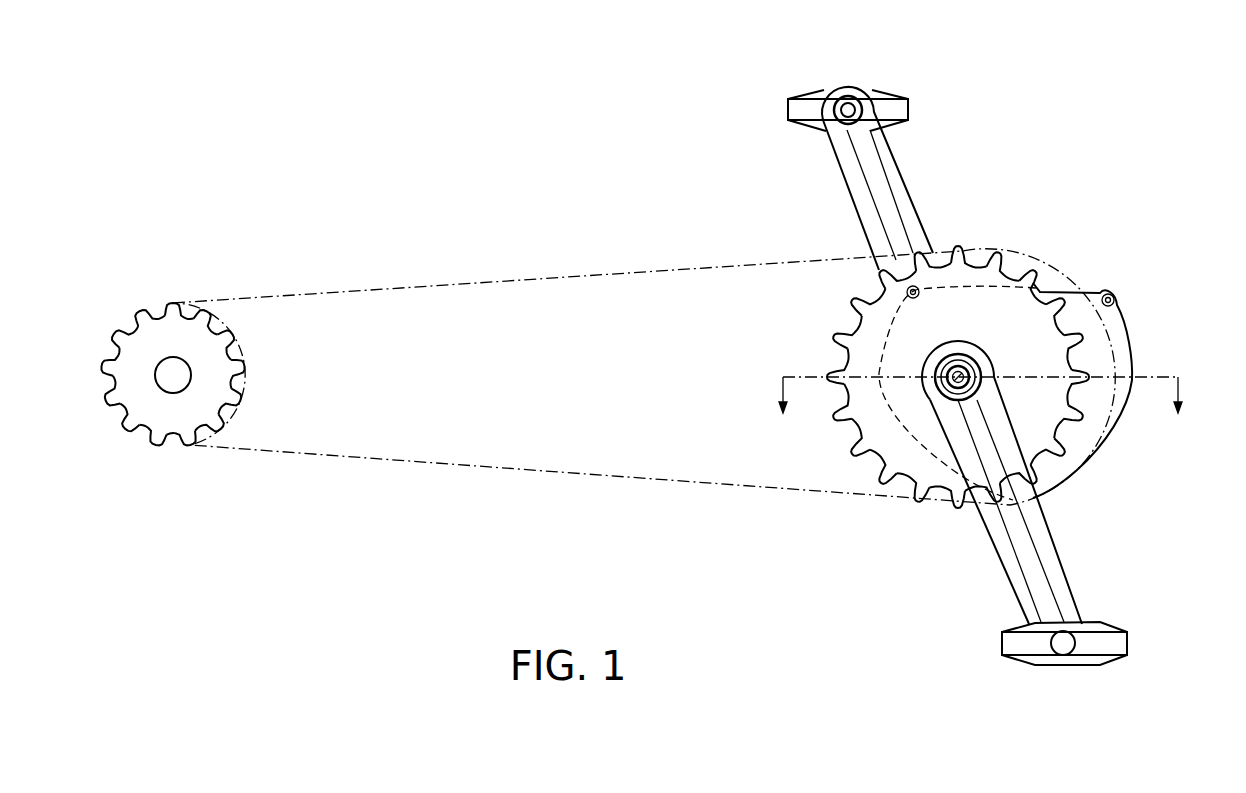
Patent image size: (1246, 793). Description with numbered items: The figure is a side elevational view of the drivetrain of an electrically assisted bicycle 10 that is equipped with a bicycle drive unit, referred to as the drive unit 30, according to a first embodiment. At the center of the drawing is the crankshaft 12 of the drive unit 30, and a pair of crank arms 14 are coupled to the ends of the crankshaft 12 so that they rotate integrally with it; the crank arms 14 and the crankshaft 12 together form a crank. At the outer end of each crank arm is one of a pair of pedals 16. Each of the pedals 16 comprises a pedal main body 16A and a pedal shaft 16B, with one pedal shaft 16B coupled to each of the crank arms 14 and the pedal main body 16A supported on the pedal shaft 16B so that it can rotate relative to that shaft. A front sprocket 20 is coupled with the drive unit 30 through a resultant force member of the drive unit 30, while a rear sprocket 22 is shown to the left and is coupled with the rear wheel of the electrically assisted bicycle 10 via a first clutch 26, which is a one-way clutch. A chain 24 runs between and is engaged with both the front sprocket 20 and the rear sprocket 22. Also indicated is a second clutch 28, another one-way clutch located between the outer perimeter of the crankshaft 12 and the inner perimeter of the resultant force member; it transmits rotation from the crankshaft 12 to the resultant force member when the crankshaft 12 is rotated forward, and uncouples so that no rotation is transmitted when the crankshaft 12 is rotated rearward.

The electrically assisted bicycle 10 is at (1090, 65).
The crankshaft 12 is at (930, 447).
The crank arms 14 is at (908, 184).
The pedals 16 is at (969, 374).
The pedal main body 16A is at (888, 118).
The pedal shaft 16B is at (928, 46).
The front sprocket 20 is at (1042, 268).
The rear sprocket 22 is at (134, 310).
The chain 24 is at (562, 475).
The first clutch 26 is at (176, 356).
The second clutch 28 is at (962, 345).
The drive unit 30 is at (1165, 312).